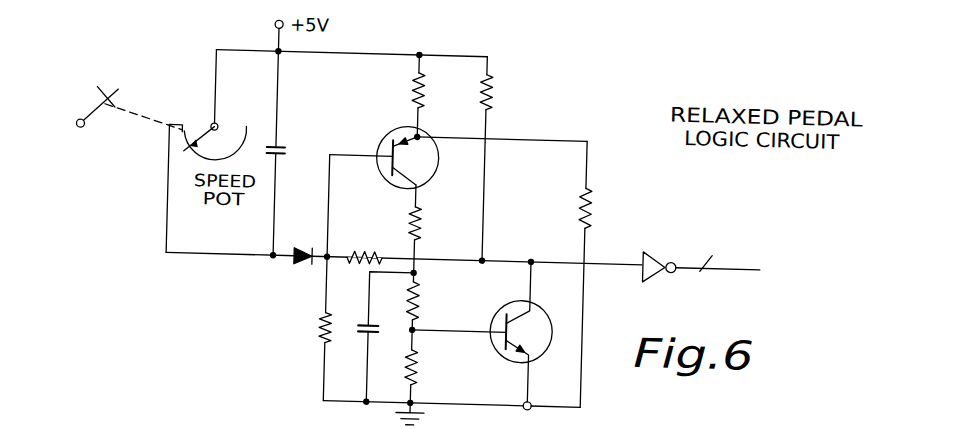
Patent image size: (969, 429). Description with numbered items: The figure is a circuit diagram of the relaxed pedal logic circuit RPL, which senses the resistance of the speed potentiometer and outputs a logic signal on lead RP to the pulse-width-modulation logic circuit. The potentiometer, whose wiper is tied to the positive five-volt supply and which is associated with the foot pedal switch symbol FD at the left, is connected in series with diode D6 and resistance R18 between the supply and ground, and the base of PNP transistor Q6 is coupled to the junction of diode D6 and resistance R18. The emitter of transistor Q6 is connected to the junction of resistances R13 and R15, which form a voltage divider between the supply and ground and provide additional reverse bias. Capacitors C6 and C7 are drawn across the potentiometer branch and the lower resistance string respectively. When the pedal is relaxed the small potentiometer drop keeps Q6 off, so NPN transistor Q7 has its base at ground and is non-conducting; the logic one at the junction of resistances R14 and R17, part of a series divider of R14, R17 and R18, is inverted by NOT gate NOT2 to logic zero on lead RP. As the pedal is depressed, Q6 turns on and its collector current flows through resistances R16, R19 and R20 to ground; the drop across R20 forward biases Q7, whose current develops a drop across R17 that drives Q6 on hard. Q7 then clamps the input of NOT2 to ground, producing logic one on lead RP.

The resistance R13 is at (421, 93).
The resistance R14 is at (489, 93).
The resistance R15 is at (591, 207).
The resistance R16 is at (421, 226).
The resistance R17 is at (364, 250).
The resistance R18 is at (319, 329).
The resistance R19 is at (421, 300).
The resistance R20 is at (421, 371).
The capacitor C6 is at (280, 150).
The capacitor C7 is at (378, 338).
The diode D6 is at (305, 250).
The PNP transistor Q6 is at (428, 182).
The NPN transistor Q7 is at (534, 356).
The NOT gate NOT2 is at (695, 283).
The foot pedal switch FD is at (128, 97).
The relaxed pedal logic circuit RPL is at (596, 131).
The lead RP is at (717, 263).